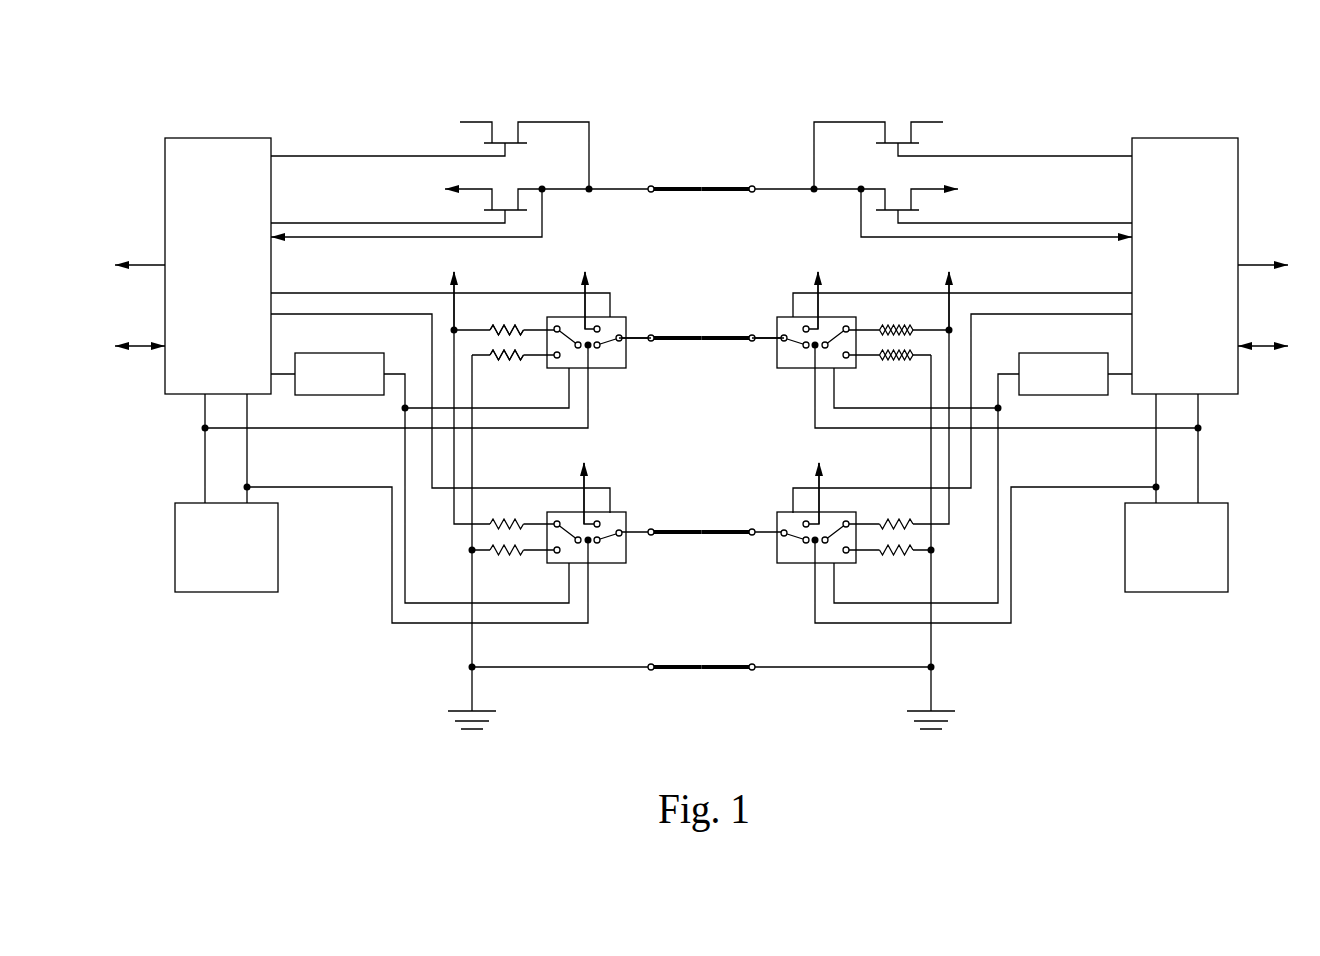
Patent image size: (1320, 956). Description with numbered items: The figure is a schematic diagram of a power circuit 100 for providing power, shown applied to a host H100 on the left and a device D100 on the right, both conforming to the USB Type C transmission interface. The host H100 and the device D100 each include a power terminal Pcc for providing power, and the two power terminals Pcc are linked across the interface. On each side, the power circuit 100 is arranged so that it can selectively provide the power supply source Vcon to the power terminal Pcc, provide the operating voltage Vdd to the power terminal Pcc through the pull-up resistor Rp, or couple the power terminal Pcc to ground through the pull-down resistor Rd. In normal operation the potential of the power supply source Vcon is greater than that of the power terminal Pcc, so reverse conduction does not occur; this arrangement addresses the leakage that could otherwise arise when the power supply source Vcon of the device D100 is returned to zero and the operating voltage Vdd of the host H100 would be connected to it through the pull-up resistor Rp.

The power circuit 100 is at (626, 357).
The host H100 is at (458, 65).
The device D100 is at (1008, 65).
The pull-up resistor Rp is at (701, 315).
The pull-down resistor Rd is at (701, 369).
The power terminal Pcc is at (701, 322).
The operating voltage Vdd is at (701, 286).
The power supply source Vcon is at (701, 383).